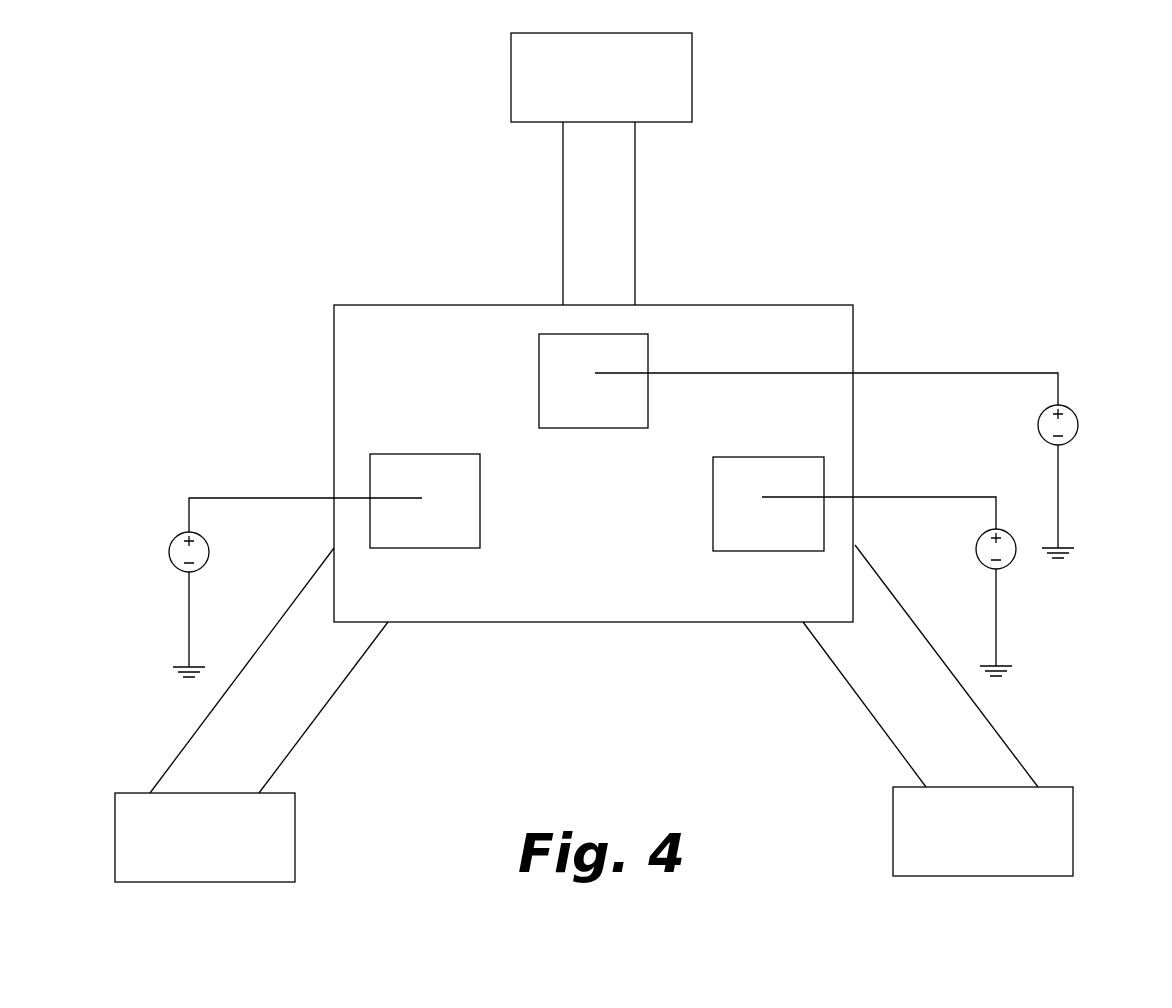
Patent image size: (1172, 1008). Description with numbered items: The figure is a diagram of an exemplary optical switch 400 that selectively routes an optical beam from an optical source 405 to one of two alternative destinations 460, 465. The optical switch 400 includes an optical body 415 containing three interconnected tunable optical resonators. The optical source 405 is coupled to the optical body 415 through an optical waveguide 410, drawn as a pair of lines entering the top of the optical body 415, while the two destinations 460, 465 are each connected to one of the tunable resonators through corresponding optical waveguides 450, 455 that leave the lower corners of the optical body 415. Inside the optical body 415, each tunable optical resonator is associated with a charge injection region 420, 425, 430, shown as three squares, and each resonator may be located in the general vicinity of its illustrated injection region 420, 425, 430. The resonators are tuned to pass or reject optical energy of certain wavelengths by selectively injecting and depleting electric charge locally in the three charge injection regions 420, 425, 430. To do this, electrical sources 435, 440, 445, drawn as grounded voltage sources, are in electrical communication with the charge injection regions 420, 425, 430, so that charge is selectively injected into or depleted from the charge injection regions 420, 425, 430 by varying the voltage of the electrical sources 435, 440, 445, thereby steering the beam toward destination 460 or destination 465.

The optical switch 400 is at (222, 188).
The optical source 405 is at (640, 116).
The optical waveguide 410 is at (598, 253).
The optical body 415 is at (383, 348).
The charge injection region 420 is at (552, 357).
The charge injection region 425 is at (383, 483).
The charge injection region 430 is at (812, 477).
The electrical source 435 is at (1087, 415).
The electrical source 440 is at (158, 557).
The electrical source 445 is at (1013, 568).
The optical waveguide 450 is at (300, 683).
The optical waveguide 455 is at (893, 705).
The destination 460 is at (238, 875).
The destination 465 is at (1026, 869).